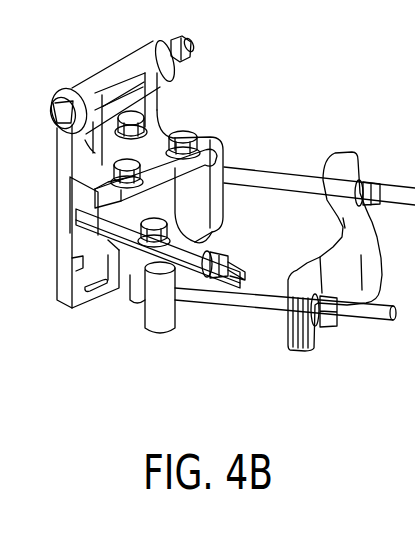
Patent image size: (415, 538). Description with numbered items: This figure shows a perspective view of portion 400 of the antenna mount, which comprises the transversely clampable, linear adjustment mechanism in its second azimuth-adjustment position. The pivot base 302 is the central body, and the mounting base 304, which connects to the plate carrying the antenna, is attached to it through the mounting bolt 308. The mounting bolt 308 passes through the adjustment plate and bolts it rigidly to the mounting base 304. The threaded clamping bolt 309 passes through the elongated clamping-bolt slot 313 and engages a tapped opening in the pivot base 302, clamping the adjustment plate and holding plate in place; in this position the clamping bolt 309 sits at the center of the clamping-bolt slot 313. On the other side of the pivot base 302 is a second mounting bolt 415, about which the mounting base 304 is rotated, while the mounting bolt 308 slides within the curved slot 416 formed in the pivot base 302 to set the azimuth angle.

The pivot base 302 is at (207, 208).
The mounting base 304 is at (103, 180).
The mounting bolt 308 is at (97, 181).
The clamping bolt 309 is at (105, 238).
The clamping-bolt slot 313 is at (140, 292).
The second mounting bolt 415 is at (186, 131).
The curved slot 416 is at (223, 220).
The portion 400 is at (250, 399).